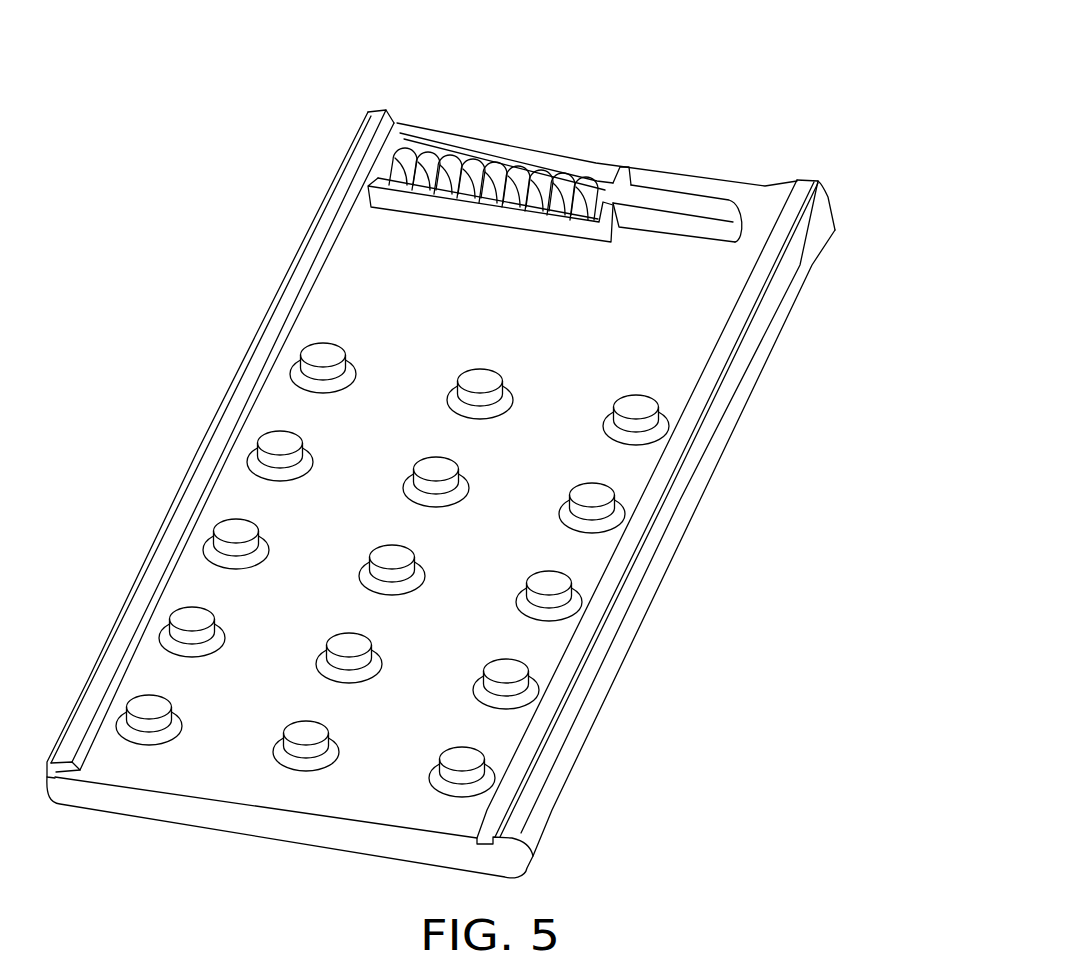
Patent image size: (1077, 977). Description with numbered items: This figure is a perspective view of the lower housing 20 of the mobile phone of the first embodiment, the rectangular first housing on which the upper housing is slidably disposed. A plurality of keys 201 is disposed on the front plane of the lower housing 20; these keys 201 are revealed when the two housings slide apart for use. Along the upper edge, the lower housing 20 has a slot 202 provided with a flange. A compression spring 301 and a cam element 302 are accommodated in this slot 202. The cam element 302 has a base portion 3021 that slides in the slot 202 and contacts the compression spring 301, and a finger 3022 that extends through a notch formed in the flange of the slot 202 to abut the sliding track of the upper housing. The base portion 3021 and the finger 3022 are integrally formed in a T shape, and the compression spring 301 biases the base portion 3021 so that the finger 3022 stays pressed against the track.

The lower housing 20 is at (123, 44).
The keys 201 is at (660, 432).
The slot 202 is at (410, 208).
The compression spring 301 is at (394, 164).
The cam element 302 is at (683, 201).
The base portion 3021 is at (593, 188).
The finger 3022 is at (725, 231).